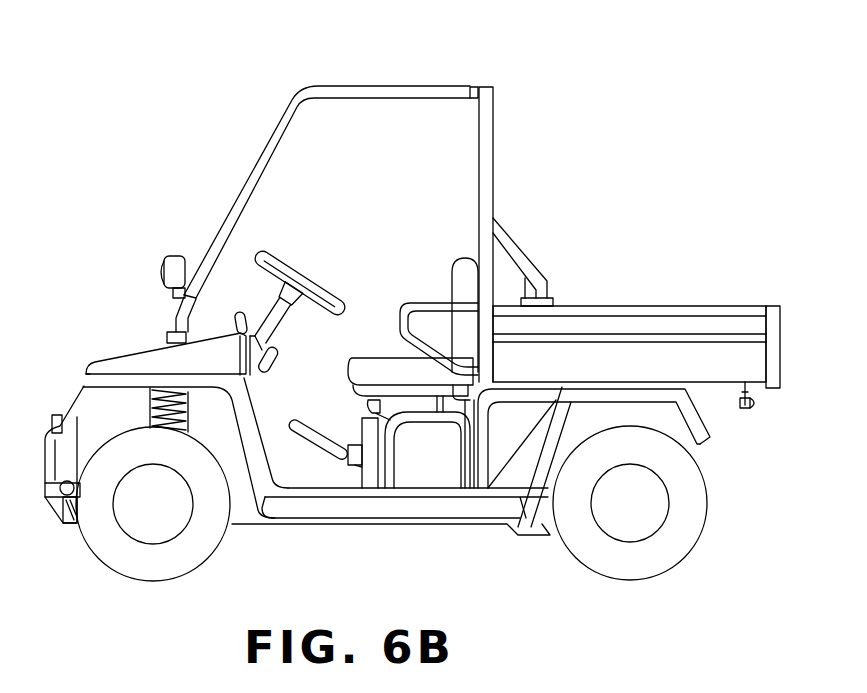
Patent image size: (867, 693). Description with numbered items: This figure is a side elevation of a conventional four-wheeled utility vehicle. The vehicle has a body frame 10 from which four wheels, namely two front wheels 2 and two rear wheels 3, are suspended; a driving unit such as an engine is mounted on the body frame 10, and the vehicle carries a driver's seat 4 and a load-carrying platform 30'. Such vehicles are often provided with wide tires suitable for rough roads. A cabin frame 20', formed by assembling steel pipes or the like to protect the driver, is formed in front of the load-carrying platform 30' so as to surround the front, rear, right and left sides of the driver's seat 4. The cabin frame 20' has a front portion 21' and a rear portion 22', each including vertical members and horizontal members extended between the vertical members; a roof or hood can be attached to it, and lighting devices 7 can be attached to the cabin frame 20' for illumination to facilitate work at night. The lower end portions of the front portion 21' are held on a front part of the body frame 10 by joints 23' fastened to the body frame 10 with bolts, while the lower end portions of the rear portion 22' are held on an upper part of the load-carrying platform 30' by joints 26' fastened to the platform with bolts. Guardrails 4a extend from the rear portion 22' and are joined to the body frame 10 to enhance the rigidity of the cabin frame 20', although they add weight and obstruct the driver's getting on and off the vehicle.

The front wheels 2 is at (100, 547).
The rear wheels 3 is at (670, 553).
The driver's seat 4 is at (458, 272).
The guardrails 4a is at (402, 317).
The lighting devices 7 is at (179, 256).
The body frame 10 is at (342, 510).
The cabin frame 20′ is at (396, 204).
The front portion of the cabin frame 21′ is at (267, 132).
The rear portion of the cabin frame 22′ is at (493, 126).
The joints 23′ is at (155, 338).
The joints 26′ is at (540, 280).
The load-carrying platform 30′ is at (677, 347).